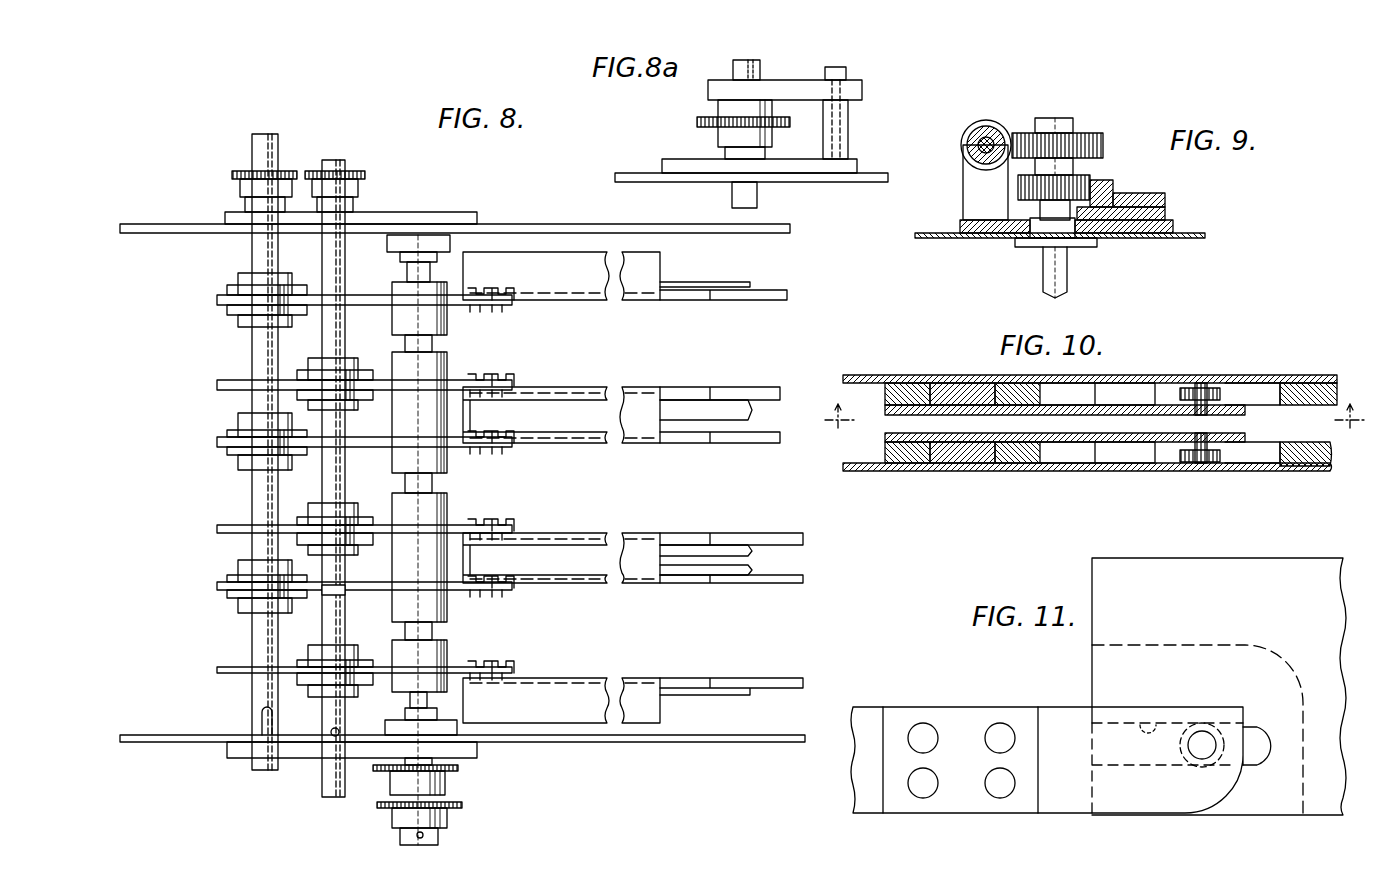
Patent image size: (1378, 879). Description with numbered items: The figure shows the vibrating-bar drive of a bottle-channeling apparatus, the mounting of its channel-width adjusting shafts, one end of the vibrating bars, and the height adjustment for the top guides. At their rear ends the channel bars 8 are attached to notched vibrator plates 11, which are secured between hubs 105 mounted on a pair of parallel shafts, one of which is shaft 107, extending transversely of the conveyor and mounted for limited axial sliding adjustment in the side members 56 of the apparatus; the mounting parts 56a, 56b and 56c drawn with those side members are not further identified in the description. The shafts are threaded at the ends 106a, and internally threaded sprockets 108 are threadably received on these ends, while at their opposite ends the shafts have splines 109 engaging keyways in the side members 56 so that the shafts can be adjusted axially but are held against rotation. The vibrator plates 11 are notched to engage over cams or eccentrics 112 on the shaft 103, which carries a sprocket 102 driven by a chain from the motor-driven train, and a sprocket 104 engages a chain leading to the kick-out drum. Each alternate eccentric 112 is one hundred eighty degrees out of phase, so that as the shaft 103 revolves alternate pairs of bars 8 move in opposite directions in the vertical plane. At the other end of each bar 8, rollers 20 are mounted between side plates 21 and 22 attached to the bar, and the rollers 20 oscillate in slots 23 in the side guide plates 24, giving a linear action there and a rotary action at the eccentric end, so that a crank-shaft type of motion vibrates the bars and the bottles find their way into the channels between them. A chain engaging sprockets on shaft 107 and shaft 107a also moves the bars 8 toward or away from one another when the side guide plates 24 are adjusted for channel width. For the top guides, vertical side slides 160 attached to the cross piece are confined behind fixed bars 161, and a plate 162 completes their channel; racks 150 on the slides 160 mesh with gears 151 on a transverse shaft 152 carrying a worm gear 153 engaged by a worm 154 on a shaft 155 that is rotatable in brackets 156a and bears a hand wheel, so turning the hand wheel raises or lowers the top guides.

In FIG. 8, the channel bar 8 is at (566, 397).
In FIG. 8, the vibrator plate 11 is at (381, 525).
In FIG. 10, the vibrator plate 11 is at (1094, 406).
In FIG. 10, the roller 20 is at (1222, 385).
In FIG. 11, the roller 20 is at (1210, 724).
In FIG. 8, the side plate 21 is at (750, 414).
In FIG. 10, the side plate 21 is at (1162, 403).
In FIG. 11, the side plate 21 is at (885, 700).
In FIG. 10, the side plate 22 is at (1130, 378).
In FIG. 11, the slot 23 is at (1148, 722).
In FIG. 8, the side guide plate 24 is at (790, 290).
In FIG. 10, the side guide plate 24 is at (1325, 380).
In FIG. 11, the side guide plate 24 is at (1228, 566).
In FIG. 8, the side member 56 is at (575, 225).
In FIG. 8A, the side member 56 is at (680, 182).
In FIG. 8, the upper plate 56a is at (382, 214).
In FIG. 8A, the upper plate 56a is at (663, 165).
In FIG. 8A, the top plate 56b is at (858, 84).
In FIG. 8A, the post 56c is at (848, 140).
In FIG. 8, the sprocket 102 is at (458, 770).
In FIG. 8, the shaft 103 is at (433, 632).
In FIG. 8, the sprocket 104 is at (462, 806).
In FIG. 8, the hub 105 is at (300, 265).
In FIG. 8, the threaded end 106a is at (330, 158).
In FIG. 8, the shaft 107 is at (276, 653).
In FIG. 8A, the shaft 107 is at (758, 197).
In FIG. 8, the shaft 107a is at (344, 588).
In FIG. 8, the sprocket 108 is at (231, 174).
In FIG. 8A, the sprocket 108 is at (696, 122).
In FIG. 8, the spline 109 is at (261, 718).
In FIG. 8, the eccentric 112 is at (447, 370).
In FIG. 9, the rack 150 is at (1112, 182).
In FIG. 9, the gear 151 is at (1010, 215).
In FIG. 9, the shaft 152 is at (1068, 282).
In FIG. 9, the worm gear 153 is at (1104, 144).
In FIG. 9, the worm 154 is at (995, 121).
In FIG. 9, the shaft 155 is at (968, 140).
In FIG. 9, the bracket 156a is at (966, 188).
In FIG. 9, the vertical side slide 160 is at (1166, 212).
In FIG. 9, the fixed bar 161 is at (1150, 195).
In FIG. 9, the plate 162 is at (1175, 228).